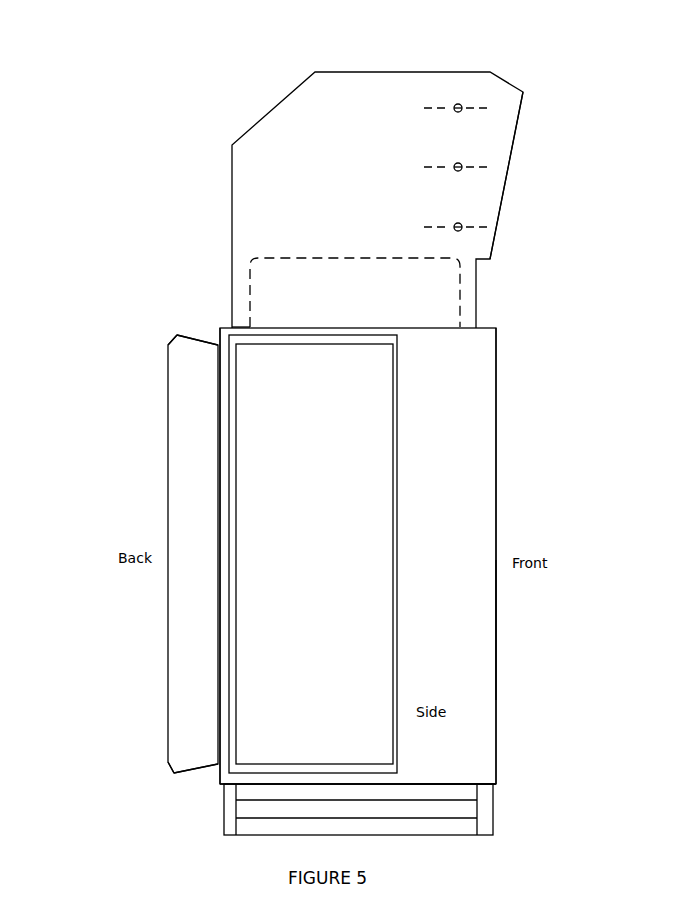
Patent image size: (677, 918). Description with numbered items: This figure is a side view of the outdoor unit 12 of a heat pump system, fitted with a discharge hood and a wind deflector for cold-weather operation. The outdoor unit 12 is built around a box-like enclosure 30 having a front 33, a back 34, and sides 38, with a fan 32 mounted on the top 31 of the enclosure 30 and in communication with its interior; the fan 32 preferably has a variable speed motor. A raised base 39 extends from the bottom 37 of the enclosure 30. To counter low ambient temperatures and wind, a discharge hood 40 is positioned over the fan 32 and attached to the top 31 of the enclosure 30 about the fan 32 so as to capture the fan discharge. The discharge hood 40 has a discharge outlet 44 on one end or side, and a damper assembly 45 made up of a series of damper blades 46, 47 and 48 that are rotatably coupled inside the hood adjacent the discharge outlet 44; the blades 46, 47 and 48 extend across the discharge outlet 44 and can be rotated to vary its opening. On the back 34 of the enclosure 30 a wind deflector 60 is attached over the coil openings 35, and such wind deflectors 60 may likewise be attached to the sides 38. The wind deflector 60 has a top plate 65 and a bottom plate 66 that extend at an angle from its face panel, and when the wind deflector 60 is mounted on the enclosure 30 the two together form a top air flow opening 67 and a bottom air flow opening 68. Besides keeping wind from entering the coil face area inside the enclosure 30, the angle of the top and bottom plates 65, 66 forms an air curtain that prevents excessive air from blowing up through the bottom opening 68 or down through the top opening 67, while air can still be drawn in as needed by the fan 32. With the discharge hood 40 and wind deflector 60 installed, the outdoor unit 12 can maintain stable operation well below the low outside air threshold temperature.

The outdoor unit 12 is at (511, 338).
The enclosure 30 is at (496, 430).
The top 31 is at (278, 327).
The fan 32 is at (323, 275).
The front 33 is at (496, 618).
The back 34 is at (218, 418).
The coil openings 35 is at (398, 462).
The bottom 37 is at (435, 775).
The sides 38 is at (443, 742).
The raised base 39 is at (228, 805).
The discharge hood 40 is at (270, 109).
The discharge outlet 44 is at (505, 195).
The damper assembly 45 is at (491, 130).
The damper blade 46 is at (424, 107).
The damper blade 47 is at (445, 165).
The damper blade 48 is at (430, 225).
The wind deflector 60 is at (169, 381).
The top plate 65 is at (177, 337).
The bottom plate 66 is at (173, 772).
The top air flow opening 67 is at (206, 340).
The bottom air flow opening 68 is at (200, 773).